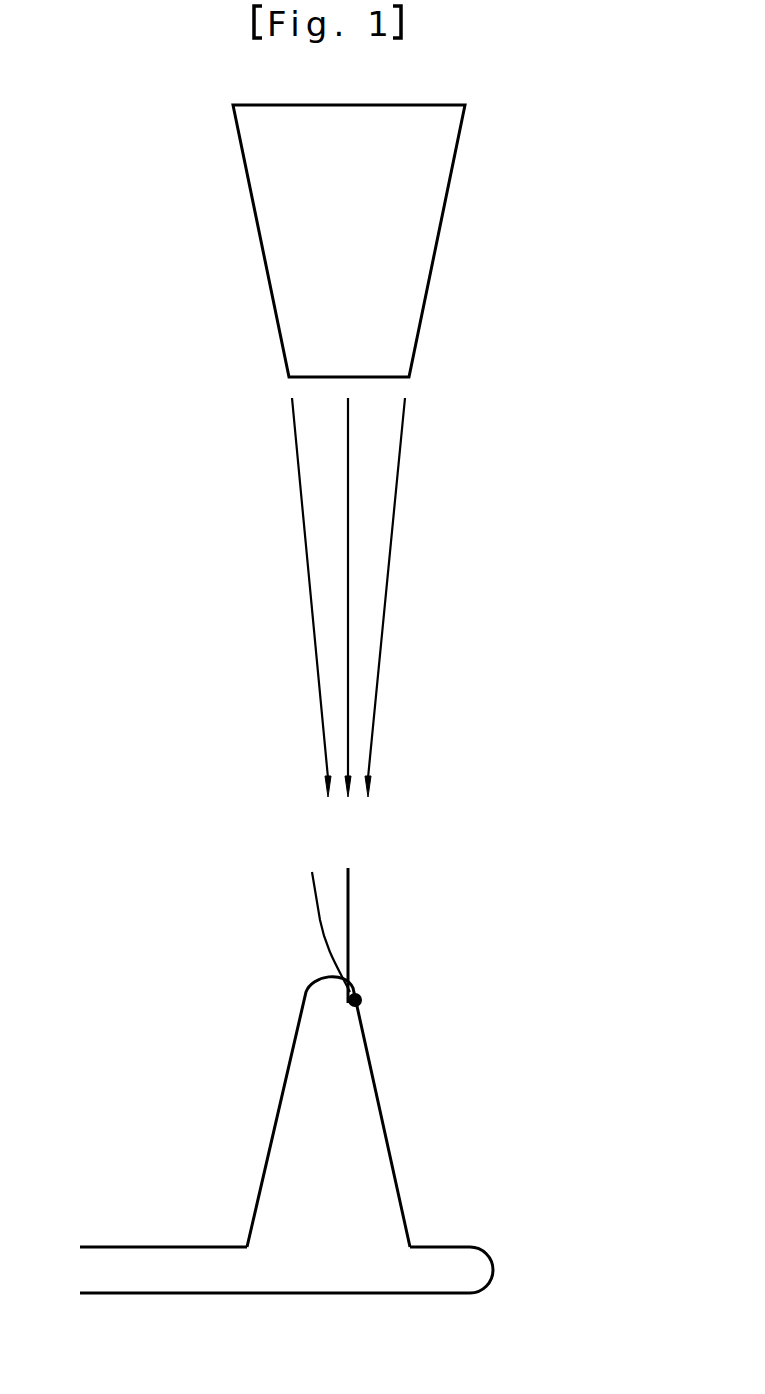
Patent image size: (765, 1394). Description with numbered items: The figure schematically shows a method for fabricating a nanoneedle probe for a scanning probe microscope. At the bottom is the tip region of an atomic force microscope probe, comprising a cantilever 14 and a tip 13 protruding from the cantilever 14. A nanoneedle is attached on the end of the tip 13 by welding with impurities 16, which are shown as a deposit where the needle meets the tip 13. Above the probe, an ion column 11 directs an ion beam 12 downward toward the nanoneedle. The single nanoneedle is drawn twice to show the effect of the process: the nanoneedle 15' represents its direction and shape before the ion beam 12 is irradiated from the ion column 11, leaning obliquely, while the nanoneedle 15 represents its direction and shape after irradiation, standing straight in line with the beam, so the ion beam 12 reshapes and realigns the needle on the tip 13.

The ion column 11 is at (440, 224).
The ion beam 12 is at (394, 528).
The tip 13 is at (370, 1125).
The cantilever 14 is at (141, 1262).
The nanoneedle 15 is at (428, 935).
The nanoneedle 15' is at (249, 932).
The impurities 16 is at (360, 998).